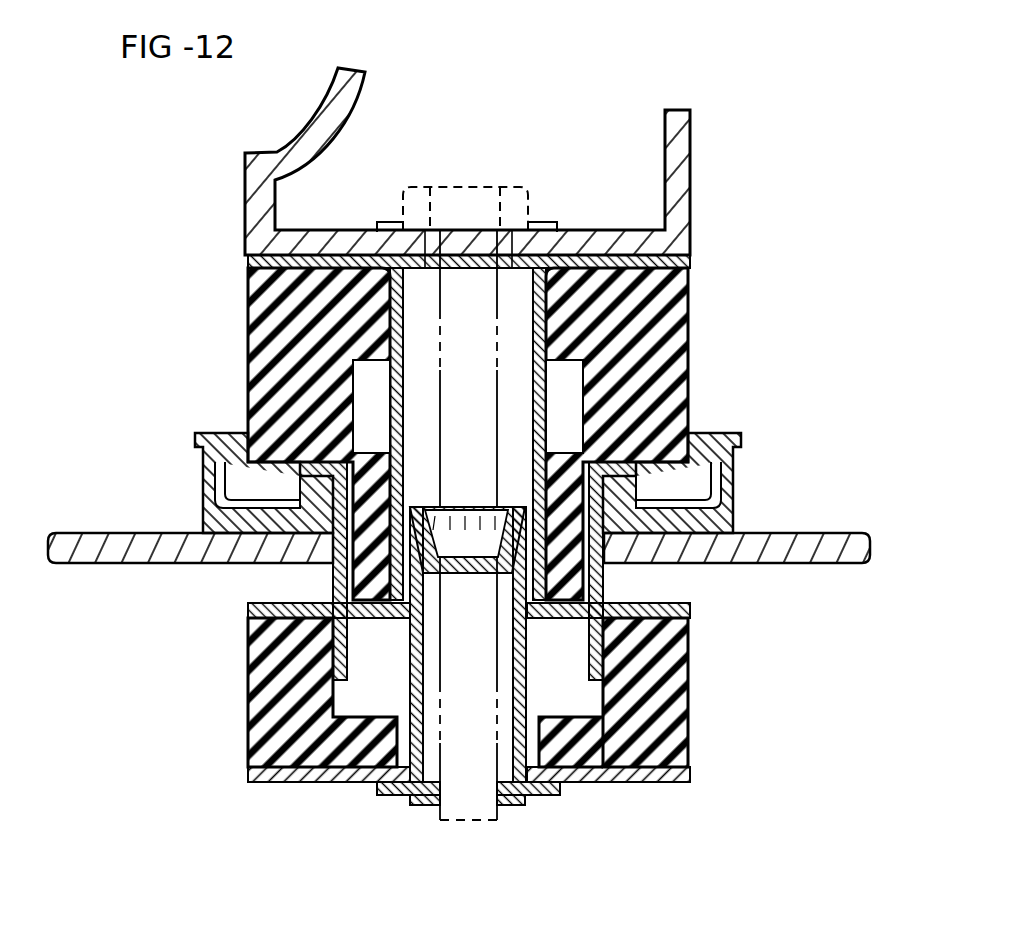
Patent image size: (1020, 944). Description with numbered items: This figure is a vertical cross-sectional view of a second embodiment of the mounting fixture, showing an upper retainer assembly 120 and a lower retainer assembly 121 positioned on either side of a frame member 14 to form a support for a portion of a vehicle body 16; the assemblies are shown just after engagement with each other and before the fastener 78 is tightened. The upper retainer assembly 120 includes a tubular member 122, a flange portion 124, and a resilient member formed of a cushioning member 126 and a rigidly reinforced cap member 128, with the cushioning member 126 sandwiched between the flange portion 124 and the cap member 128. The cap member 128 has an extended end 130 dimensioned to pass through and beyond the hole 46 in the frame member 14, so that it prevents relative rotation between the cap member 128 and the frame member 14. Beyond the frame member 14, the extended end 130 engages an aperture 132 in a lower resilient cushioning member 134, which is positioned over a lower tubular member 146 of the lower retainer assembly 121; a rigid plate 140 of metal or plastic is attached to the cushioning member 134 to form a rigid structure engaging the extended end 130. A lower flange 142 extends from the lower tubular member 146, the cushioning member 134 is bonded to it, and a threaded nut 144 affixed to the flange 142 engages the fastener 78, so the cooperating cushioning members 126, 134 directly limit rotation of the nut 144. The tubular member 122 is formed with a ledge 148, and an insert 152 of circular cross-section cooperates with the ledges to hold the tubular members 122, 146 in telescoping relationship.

The frame member 14 is at (95, 565).
The vehicle body 16 is at (690, 176).
The hole 46 is at (330, 576).
The fastener 78 is at (485, 185).
The upper retainer assembly 120 is at (700, 334).
The lower retainer assembly 121 is at (246, 730).
The tubular member 122 is at (548, 396).
The flange portion 124 is at (692, 262).
The cushioning member 126 is at (680, 398).
The cap member 128 is at (746, 498).
The extended end 130 is at (612, 655).
The aperture 132 is at (563, 672).
The lower resilient cushioning member 134 is at (688, 745).
The rigid plate 140 is at (695, 608).
The lower flange 142 is at (250, 786).
The threaded nut 144 is at (520, 803).
The lower tubular member 146 is at (600, 785).
The ledge 148 is at (497, 520).
The insert 152 is at (421, 500).